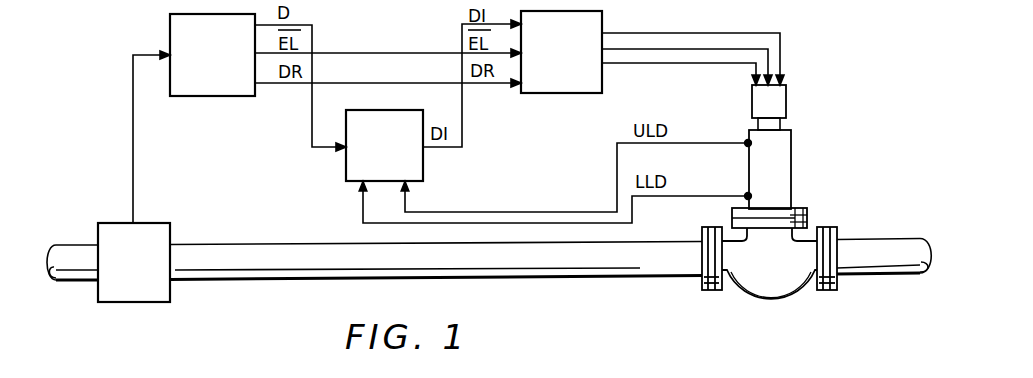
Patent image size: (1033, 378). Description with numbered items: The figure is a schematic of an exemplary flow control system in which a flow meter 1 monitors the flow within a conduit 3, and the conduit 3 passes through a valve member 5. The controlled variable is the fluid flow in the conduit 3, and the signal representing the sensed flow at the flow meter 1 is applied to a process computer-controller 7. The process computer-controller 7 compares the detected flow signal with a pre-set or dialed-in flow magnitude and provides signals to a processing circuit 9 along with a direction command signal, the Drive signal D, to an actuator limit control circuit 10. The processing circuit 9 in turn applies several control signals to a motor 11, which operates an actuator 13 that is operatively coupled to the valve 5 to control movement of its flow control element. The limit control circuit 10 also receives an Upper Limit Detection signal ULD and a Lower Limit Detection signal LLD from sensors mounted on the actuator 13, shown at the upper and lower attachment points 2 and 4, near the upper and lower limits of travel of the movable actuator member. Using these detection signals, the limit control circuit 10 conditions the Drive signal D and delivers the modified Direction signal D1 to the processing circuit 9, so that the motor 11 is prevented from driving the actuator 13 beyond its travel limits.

The flow meter 1 is at (142, 271).
The upper limit detector 2 is at (744, 140).
The conduit 3 is at (247, 250).
The lower limit detector 4 is at (745, 195).
The valve member 5 is at (803, 209).
The process computer-controller 7 is at (220, 58).
The processing circuit 9 is at (569, 58).
The actuator limit control circuit 10 is at (397, 156).
The motor 11 is at (772, 98).
The actuator 13 is at (776, 163).